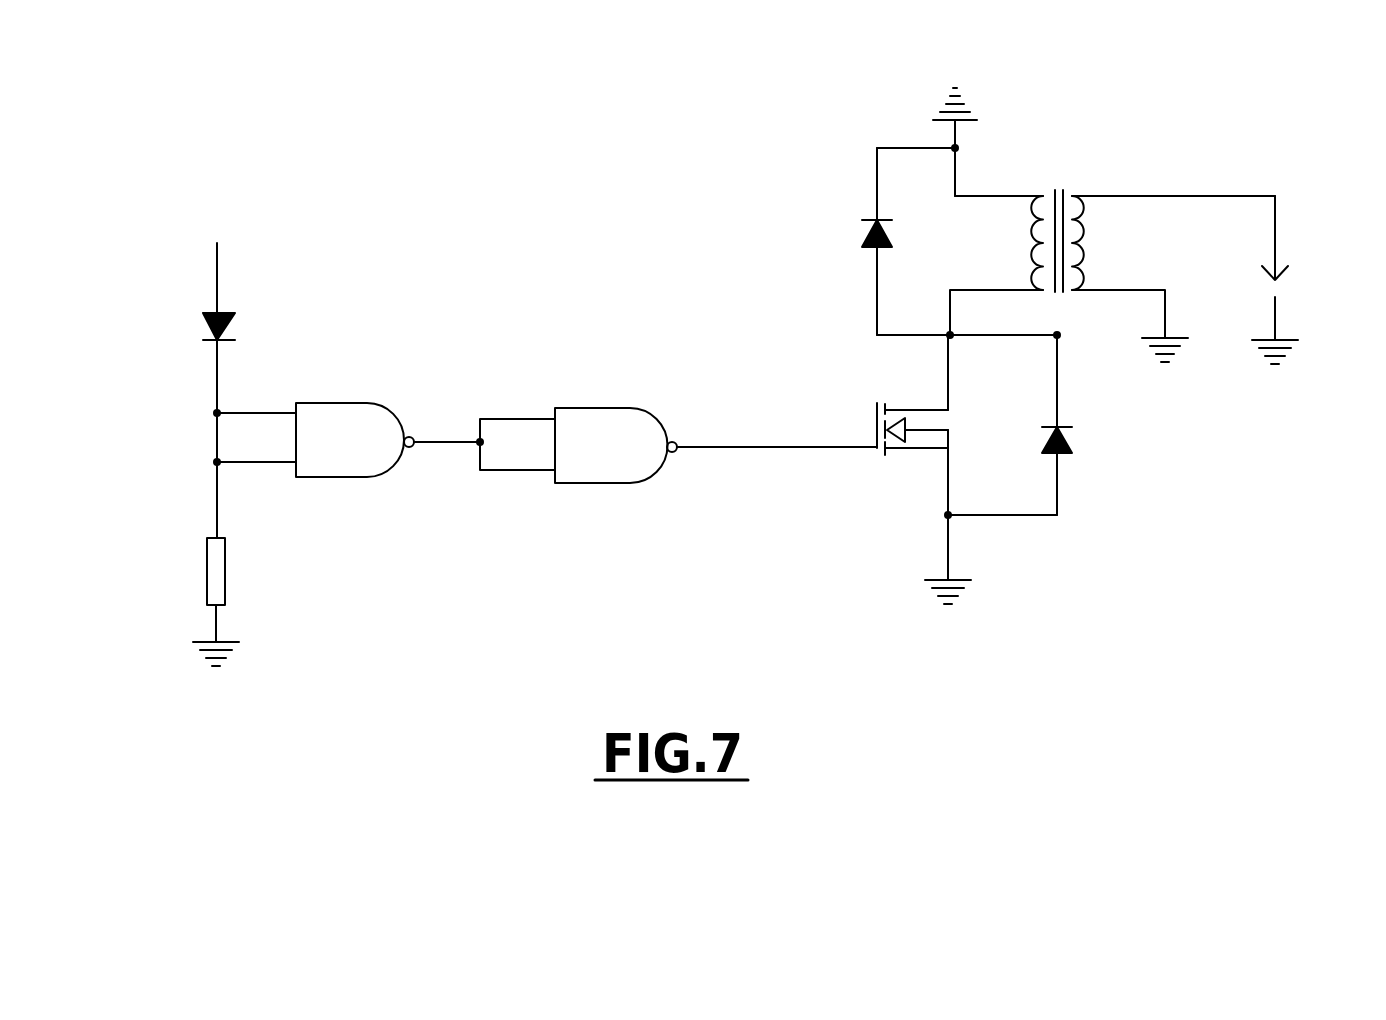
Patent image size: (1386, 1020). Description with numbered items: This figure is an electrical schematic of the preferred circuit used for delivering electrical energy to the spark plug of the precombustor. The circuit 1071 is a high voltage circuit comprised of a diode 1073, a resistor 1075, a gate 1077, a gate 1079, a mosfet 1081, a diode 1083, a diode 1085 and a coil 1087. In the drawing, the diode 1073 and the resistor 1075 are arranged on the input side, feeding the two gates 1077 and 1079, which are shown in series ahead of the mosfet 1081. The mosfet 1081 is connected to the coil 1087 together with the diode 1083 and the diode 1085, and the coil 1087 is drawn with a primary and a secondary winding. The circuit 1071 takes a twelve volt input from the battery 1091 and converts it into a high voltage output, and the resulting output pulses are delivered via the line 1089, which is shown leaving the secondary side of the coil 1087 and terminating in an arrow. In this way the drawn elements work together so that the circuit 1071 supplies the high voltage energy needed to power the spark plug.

The circuit 1071 is at (742, 384).
The diode 1073 is at (224, 304).
The resistor 1075 is at (208, 565).
The gate 1077 is at (335, 477).
The gate 1079 is at (577, 479).
The mosfet 1081 is at (893, 450).
The diode 1083 is at (862, 232).
The diode 1085 is at (1060, 455).
The coil 1087 is at (1048, 196).
The line 1089 is at (1278, 262).
The battery 1091 is at (945, 102).